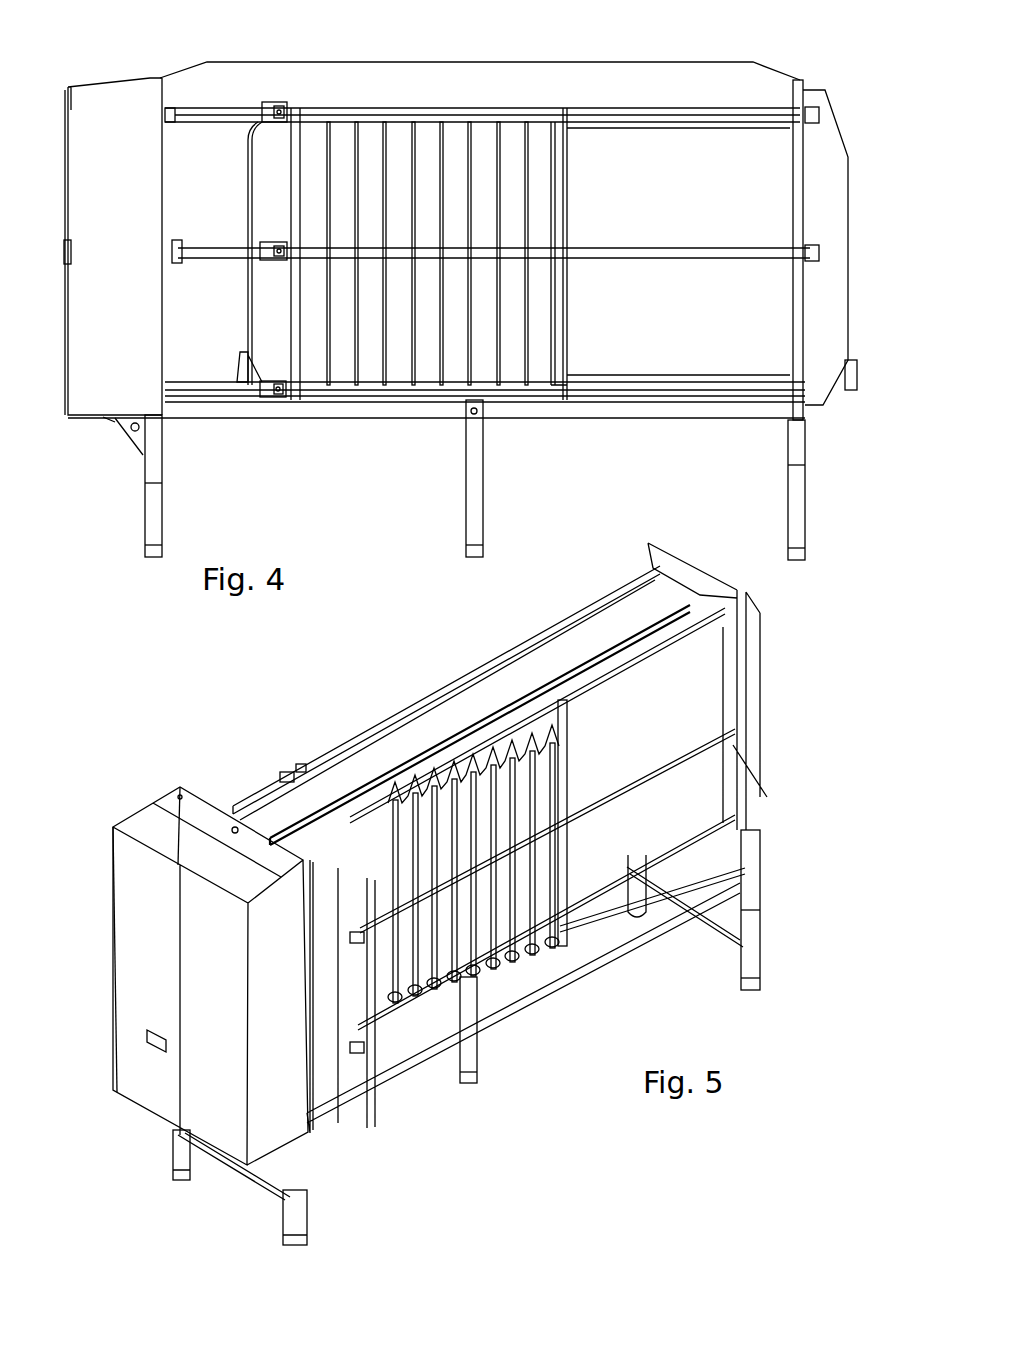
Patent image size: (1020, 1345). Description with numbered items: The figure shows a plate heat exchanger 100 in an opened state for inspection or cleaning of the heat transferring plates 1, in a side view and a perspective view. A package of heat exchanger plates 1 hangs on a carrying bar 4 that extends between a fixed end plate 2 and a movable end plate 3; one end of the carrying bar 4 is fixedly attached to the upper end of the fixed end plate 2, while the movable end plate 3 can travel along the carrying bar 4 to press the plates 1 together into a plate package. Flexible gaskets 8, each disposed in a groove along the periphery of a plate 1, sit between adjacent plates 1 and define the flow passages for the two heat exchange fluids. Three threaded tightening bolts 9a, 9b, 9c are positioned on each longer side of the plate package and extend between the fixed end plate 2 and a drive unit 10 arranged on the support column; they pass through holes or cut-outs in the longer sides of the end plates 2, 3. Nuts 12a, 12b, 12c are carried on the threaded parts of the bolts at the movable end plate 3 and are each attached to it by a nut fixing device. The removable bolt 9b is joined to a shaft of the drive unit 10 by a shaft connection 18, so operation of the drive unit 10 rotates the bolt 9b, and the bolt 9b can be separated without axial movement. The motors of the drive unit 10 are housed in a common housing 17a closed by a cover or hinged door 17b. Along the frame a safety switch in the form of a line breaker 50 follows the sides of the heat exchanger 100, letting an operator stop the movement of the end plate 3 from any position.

In FIG. 4, the heat transferring plates 1 is at (530, 147).
In FIG. 5, the heat transferring plates 1 is at (573, 912).
In FIG. 4, the fixed end plate 2 is at (800, 150).
In FIG. 5, the fixed end plate 2 is at (746, 777).
In FIG. 4, the movable end plate 3 is at (330, 403).
In FIG. 5, the movable end plate 3 is at (377, 1085).
In FIG. 4, the carrying bar 4 is at (393, 88).
In FIG. 5, the carrying bar 4 is at (427, 723).
In FIG. 5, the flexible gaskets 8 is at (427, 760).
In FIG. 4, the tightening bolt 9a is at (610, 393).
In FIG. 5, the tightening bolt 9a is at (480, 890).
In FIG. 4, the removable bolt 9b is at (596, 255).
In FIG. 5, the removable bolt 9b is at (487, 980).
In FIG. 4, the tightening bolt 9c is at (185, 110).
In FIG. 4, the drive unit 10 is at (78, 365).
In FIG. 5, the drive unit 10 is at (297, 1123).
In FIG. 4, the nut 12a is at (270, 387).
In FIG. 5, the nut 12a is at (357, 1073).
In FIG. 4, the nut 12b is at (267, 247).
In FIG. 5, the nut 12b is at (387, 1007).
In FIG. 4, the nut 12c is at (263, 107).
In FIG. 5, the nut 12c is at (292, 738).
In FIG. 5, the housing 17a is at (166, 798).
In FIG. 5, the cover or hinged door 17b is at (150, 920).
In FIG. 4, the shaft connection 18 is at (175, 257).
In FIG. 4, the line breaker 50 is at (578, 422).
In FIG. 4, the plate heat exchanger 100 is at (349, 456).
In FIG. 5, the plate heat exchanger 100 is at (560, 1035).